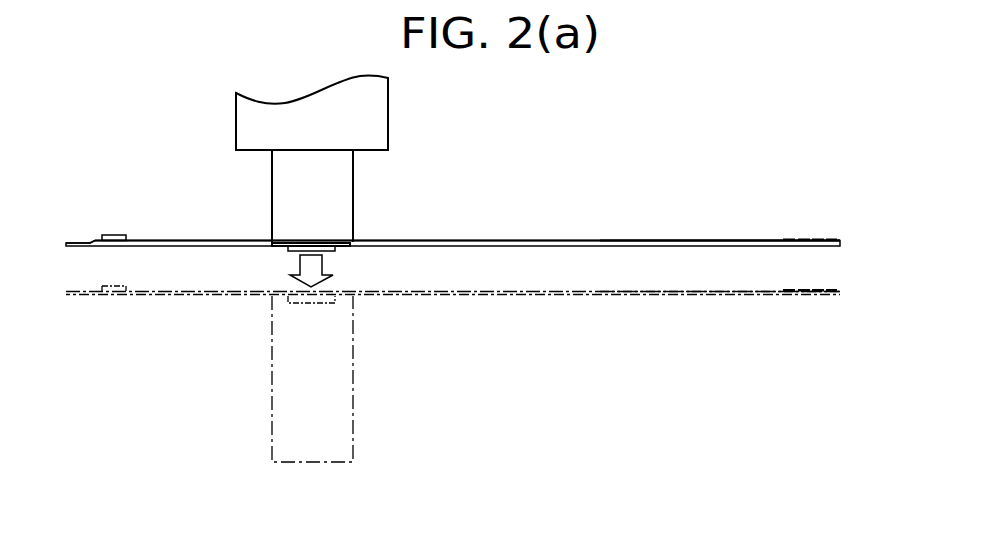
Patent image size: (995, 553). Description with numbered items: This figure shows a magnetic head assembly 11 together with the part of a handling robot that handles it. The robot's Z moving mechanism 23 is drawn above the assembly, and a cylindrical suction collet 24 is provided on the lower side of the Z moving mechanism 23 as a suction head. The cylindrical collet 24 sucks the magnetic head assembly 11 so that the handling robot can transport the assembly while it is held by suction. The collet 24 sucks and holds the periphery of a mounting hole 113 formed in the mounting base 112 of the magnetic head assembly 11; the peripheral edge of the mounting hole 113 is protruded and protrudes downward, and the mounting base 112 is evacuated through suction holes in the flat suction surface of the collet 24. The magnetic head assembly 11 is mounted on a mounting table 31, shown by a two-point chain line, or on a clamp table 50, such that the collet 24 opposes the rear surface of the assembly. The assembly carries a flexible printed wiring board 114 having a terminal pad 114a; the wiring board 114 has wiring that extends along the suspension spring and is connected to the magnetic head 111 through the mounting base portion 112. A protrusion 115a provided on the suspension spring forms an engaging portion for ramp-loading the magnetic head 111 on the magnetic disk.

The magnetic head assembly 11 is at (608, 185).
The Z moving mechanism 23 is at (385, 92).
The cylindrical suction collet 24 is at (353, 168).
The mounting table 31 is at (385, 381).
The clamp table 50 is at (343, 435).
The magnetic head 111 is at (120, 234).
The mounting base 112 is at (345, 248).
The mounting hole 113 is at (290, 250).
The flexible printed wiring board 114 is at (730, 240).
The terminal pad 114a is at (813, 238).
The protrusion 115a is at (82, 242).